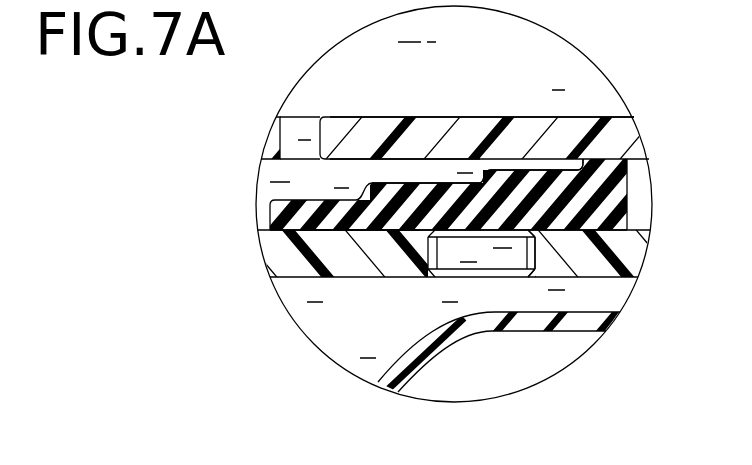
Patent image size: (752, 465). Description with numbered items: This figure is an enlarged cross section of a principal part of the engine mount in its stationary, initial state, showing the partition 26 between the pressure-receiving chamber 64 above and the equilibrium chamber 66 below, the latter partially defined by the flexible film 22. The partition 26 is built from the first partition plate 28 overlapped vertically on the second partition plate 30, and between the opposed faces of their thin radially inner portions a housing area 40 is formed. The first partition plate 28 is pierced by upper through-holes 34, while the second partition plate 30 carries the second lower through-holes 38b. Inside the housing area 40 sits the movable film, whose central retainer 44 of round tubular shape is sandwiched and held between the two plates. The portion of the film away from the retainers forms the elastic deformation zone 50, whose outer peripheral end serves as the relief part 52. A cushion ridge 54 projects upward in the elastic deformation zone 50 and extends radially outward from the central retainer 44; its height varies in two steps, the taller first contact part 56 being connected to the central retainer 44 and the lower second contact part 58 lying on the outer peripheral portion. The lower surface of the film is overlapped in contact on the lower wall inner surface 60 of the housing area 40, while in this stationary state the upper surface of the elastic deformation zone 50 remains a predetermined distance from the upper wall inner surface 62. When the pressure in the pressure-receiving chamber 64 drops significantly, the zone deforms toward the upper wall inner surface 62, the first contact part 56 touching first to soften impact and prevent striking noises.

The flexible film 22 is at (578, 322).
The partition 26 is at (584, 118).
The first partition plate 28 is at (413, 146).
The second partition plate 30 is at (305, 263).
The upper through-holes 34 is at (281, 146).
The second lower through-holes 38b is at (527, 242).
The housing area 40 is at (393, 173).
The central retainer 44 is at (610, 205).
The elastic deformation zone 50 is at (353, 231).
The relief part 52 is at (278, 213).
The cushion ridge 54 is at (532, 70).
The first contact part 56 is at (518, 178).
The second contact part 58 is at (455, 172).
The lower wall inner surface 60 is at (380, 231).
The upper wall inner surface 62 is at (345, 160).
The pressure-receiving chamber 64 is at (347, 100).
The equilibrium chamber 66 is at (382, 335).